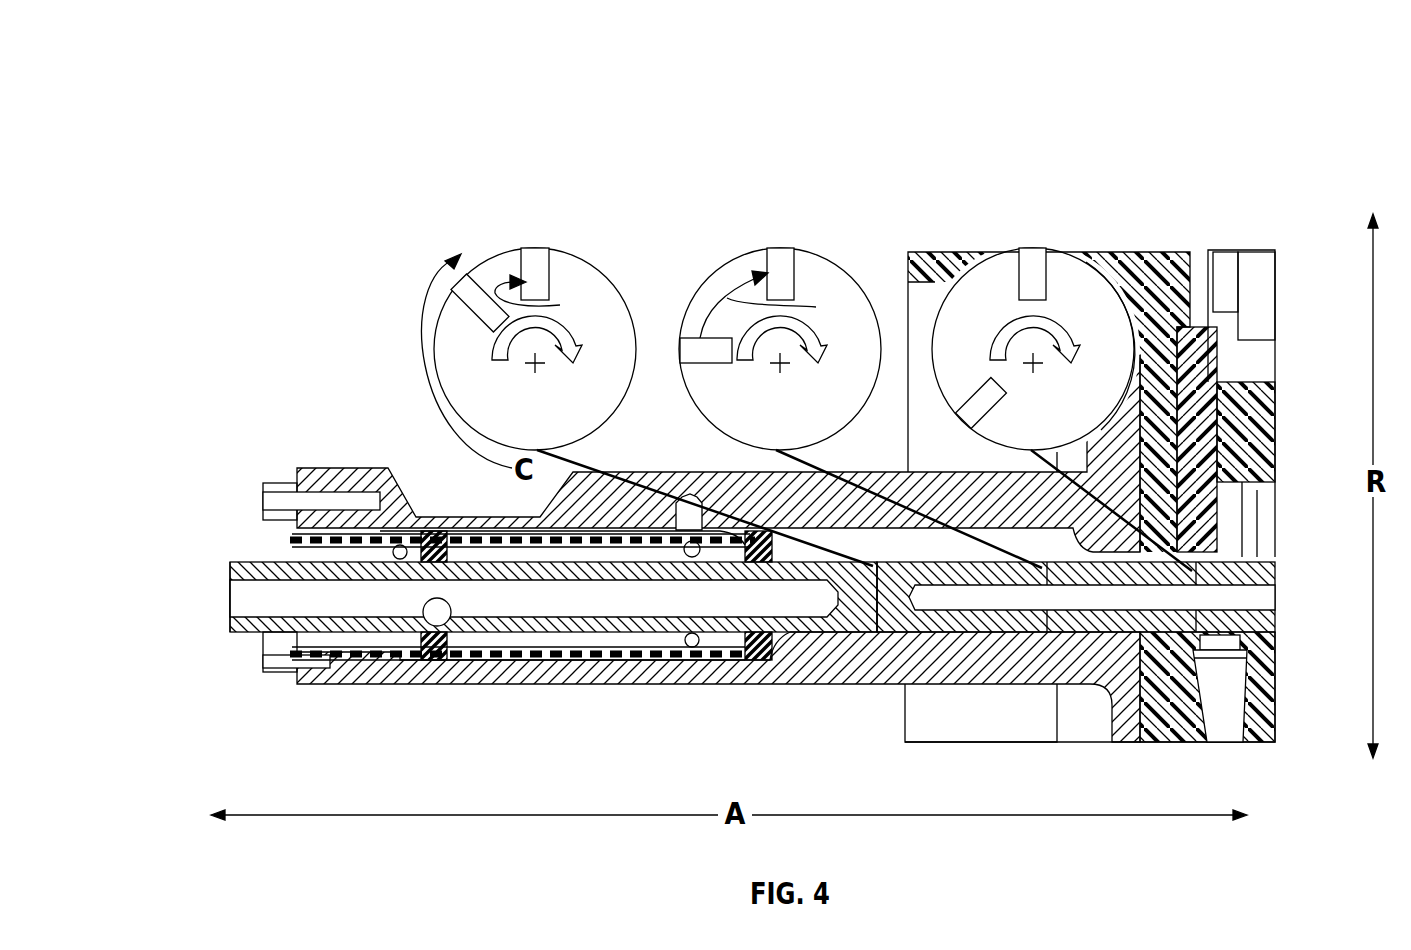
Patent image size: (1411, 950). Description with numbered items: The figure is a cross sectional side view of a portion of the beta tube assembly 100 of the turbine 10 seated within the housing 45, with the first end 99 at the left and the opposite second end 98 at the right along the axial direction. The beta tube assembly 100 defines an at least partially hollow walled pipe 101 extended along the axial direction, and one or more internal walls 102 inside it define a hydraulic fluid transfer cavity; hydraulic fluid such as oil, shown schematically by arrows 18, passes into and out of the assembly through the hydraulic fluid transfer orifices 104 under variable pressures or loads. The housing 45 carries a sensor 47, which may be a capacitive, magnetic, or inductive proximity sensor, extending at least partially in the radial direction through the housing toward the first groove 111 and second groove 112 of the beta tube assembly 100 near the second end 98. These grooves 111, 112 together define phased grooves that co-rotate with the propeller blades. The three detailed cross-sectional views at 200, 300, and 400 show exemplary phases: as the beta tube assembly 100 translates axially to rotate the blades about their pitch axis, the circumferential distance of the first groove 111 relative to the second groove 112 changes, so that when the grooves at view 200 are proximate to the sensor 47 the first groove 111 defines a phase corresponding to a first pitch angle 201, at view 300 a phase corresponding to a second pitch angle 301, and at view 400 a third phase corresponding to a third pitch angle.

The turbine 10 is at (1175, 125).
The housing 45 is at (1255, 185).
The arrows 18 is at (382, 575).
The sensor 47 is at (1252, 642).
The second end 98 is at (1312, 614).
The first end 99 is at (124, 617).
The beta tube assembly 100 is at (491, 288).
The hollow walled pipe 101 is at (572, 625).
The internal walls 102 is at (776, 632).
The hydraulic fluid transfer orifices 104 is at (432, 622).
The first groove 111 is at (468, 288).
The second groove 112 is at (535, 248).
The view 200 is at (604, 275).
The first pitch angle 201 is at (545, 298).
The view 300 is at (829, 272).
The second pitch angle 301 is at (776, 304).
The view 400 is at (1080, 272).